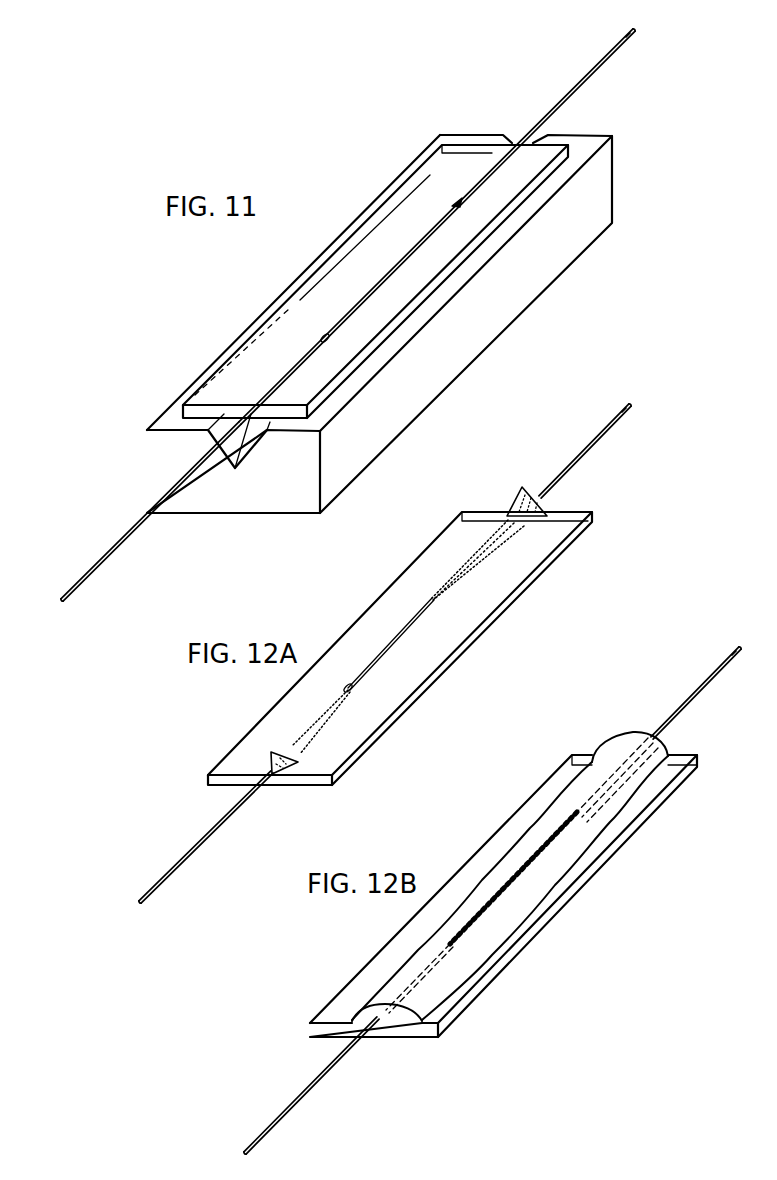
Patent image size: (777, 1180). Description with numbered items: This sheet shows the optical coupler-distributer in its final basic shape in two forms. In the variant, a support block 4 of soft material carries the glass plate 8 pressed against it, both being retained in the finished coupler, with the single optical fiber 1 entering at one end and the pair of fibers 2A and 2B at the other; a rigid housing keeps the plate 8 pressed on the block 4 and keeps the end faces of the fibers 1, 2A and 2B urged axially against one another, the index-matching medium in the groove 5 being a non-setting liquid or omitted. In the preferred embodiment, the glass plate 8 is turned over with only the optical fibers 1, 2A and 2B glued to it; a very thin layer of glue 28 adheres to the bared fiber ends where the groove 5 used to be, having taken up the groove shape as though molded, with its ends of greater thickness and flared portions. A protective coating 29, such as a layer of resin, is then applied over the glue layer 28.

In FIG. 11, the single optical fiber 1 is at (95, 560).
In FIG. 12A, the single optical fiber 1 is at (200, 845).
In FIG. 12B, the single optical fiber 1 is at (306, 1092).
In FIG. 11, the optical fiber of the pair 2A is at (574, 72).
In FIG. 12A, the optical fiber of the pair 2A is at (606, 425).
In FIG. 12B, the optical fiber of the pair 2A is at (686, 700).
In FIG. 11, the optical fiber of the pair 2B is at (620, 52).
In FIG. 12A, the optical fiber of the pair 2B is at (621, 420).
In FIG. 12B, the optical fiber of the pair 2B is at (685, 708).
In FIG. 11, the support block 4 is at (598, 192).
In FIG. 12A, the groove 5 is at (423, 623).
In FIG. 11, the glass plate 8 is at (402, 220).
In FIG. 12A, the glass plate 8 is at (417, 662).
In FIG. 12B, the glass plate 8 is at (590, 848).
In FIG. 12A, the glue layer 28 is at (296, 768).
In FIG. 12B, the protective resin coating 29 is at (470, 933).